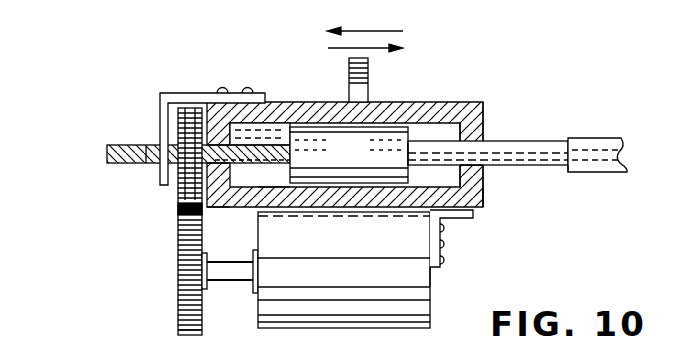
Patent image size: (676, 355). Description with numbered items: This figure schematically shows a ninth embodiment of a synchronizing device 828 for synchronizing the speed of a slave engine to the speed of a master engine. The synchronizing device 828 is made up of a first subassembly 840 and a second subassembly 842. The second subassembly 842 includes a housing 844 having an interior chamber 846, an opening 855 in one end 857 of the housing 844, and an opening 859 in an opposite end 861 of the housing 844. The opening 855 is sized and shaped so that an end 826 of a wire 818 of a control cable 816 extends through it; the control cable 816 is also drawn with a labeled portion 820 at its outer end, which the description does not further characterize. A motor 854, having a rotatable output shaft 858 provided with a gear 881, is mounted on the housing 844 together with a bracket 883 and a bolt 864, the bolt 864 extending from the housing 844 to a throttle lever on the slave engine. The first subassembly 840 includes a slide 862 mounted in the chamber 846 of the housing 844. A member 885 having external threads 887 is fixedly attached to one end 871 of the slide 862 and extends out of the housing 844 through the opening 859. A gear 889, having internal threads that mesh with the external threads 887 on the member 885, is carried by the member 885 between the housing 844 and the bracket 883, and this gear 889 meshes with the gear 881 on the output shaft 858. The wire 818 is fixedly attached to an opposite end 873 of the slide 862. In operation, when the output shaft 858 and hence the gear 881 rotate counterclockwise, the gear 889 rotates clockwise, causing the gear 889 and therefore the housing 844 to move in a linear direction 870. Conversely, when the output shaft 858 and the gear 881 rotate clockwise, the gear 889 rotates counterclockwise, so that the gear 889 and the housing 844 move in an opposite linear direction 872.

The control cable 816 is at (603, 174).
The wire 818 is at (503, 148).
The shaft coupling 820 is at (595, 142).
The end of wire 826 is at (418, 147).
The synchronizing device 828 is at (500, 238).
The first subassembly 840 is at (278, 135).
The second subassembly 842 is at (483, 102).
The housing 844 is at (447, 102).
The interior chamber 846 is at (252, 133).
The motor 854 is at (325, 297).
The opening 855 is at (482, 158).
The end of housing 857 is at (485, 193).
The output shaft 858 is at (232, 272).
The opening 859 is at (222, 209).
The opposite end of housing 861 is at (178, 215).
The slide 862 is at (372, 159).
The bolt 864 is at (349, 92).
The linear direction 870 is at (383, 46).
The end of slide 871 is at (272, 190).
The opposite linear direction 872 is at (363, 28).
The opposite end of slide 873 is at (405, 178).
The gear 881 is at (178, 292).
The bracket 883 is at (166, 93).
The member 885 is at (107, 155).
The external threads 887 is at (146, 145).
The gear 889 is at (188, 178).